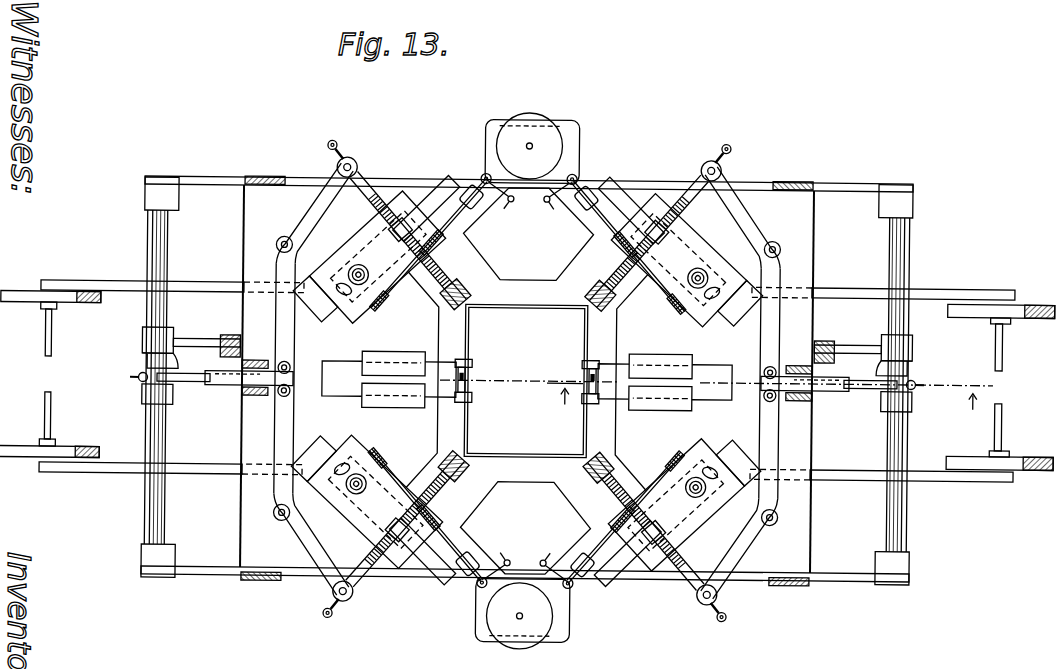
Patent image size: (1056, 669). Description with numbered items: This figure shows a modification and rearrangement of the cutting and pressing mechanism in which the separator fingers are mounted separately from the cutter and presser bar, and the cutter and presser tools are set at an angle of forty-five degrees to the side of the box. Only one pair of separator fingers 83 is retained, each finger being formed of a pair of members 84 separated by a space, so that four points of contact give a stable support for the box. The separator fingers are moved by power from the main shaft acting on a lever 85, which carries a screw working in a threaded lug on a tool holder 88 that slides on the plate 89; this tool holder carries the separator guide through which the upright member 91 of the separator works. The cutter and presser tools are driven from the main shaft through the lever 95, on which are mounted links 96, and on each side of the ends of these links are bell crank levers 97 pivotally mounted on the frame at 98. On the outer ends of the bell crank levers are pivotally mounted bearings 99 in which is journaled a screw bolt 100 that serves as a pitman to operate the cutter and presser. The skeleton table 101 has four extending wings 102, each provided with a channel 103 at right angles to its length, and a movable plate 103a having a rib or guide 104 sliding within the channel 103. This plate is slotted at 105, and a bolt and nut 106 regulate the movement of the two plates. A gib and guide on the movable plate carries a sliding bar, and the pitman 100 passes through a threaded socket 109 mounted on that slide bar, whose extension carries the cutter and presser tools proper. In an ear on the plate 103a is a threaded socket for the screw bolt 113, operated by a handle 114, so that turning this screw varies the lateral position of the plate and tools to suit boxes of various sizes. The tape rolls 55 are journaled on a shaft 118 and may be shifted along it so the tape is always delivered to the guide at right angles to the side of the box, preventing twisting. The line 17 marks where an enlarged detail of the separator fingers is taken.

The section line 17— 17 is at (729, 392).
The tape rolls 55 is at (90, 300).
The pair of separator fingers 83 is at (585, 380).
The members of the separator fingers 84 is at (583, 400).
The lever 85 is at (893, 398).
The tool holder 88 is at (343, 370).
The plate 89 is at (440, 425).
The upright member of the separator 91 is at (592, 370).
The lever 95 is at (890, 365).
The links 96 is at (872, 387).
The bell crank levers 97 is at (307, 222).
The pivot on the frame 98 is at (282, 244).
The bearings 99 is at (349, 167).
The screw bolt 100 is at (678, 182).
The skeleton table 101 is at (527, 380).
The extending wings 102 is at (323, 180).
The channel 103 is at (447, 195).
The movable plate 103a is at (334, 262).
The rib or guide 104 is at (437, 205).
The slot 105 is at (340, 317).
The bolt and nut 106 is at (380, 300).
The threaded socket 109 is at (447, 253).
The screw bolt 113 is at (455, 231).
The handle 114 is at (580, 183).
The shaft 118 is at (50, 417).